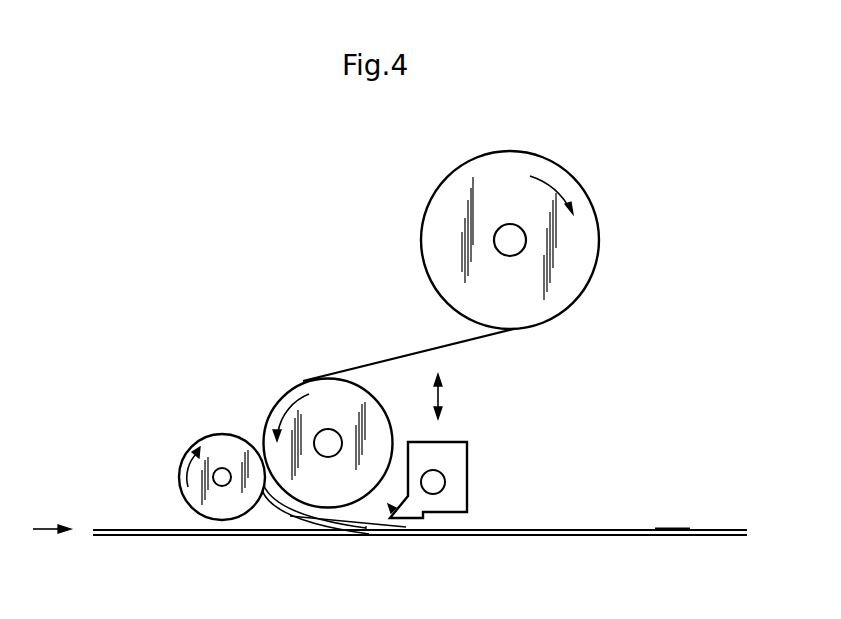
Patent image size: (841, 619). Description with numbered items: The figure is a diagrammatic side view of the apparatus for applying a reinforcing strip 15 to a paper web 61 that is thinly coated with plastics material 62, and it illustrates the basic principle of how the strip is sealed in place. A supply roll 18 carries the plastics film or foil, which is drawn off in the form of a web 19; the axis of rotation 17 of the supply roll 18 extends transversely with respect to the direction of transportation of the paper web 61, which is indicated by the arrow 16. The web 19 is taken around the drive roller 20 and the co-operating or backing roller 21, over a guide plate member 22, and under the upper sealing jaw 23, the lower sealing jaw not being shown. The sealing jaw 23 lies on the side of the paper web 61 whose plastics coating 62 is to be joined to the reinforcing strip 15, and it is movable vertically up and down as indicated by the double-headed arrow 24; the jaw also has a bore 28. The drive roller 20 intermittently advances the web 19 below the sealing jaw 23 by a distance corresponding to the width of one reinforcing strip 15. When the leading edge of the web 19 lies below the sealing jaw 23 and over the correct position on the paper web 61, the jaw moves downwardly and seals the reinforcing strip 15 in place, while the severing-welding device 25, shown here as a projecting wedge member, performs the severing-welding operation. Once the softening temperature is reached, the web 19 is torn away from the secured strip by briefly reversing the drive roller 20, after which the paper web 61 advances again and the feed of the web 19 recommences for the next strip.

The reinforcing strip 15 is at (667, 528).
The arrow indicating direction of transportation of the paper web 16 is at (37, 528).
The axis of rotation of the supply roll 17 is at (510, 232).
The supply roll 18 is at (447, 207).
The web of plastics film or foil 19 is at (383, 360).
The drive roller 20 is at (285, 392).
The co-operating or backing roller 21 is at (218, 437).
The guide plate member 22 is at (290, 516).
The upper sealing jaw 23 is at (450, 458).
The double-headed arrow indicating vertical movement of the sealing jaw 24 is at (443, 396).
The severing-welding device 25 is at (391, 511).
The pivot bore 28 is at (440, 482).
The paper web 61 is at (738, 532).
The plastics coating 62 is at (140, 528).